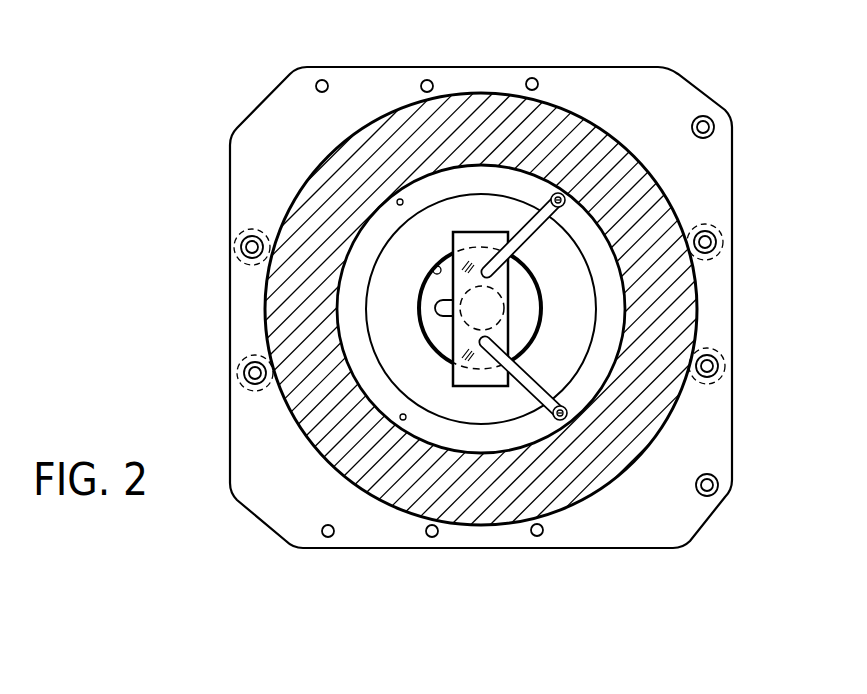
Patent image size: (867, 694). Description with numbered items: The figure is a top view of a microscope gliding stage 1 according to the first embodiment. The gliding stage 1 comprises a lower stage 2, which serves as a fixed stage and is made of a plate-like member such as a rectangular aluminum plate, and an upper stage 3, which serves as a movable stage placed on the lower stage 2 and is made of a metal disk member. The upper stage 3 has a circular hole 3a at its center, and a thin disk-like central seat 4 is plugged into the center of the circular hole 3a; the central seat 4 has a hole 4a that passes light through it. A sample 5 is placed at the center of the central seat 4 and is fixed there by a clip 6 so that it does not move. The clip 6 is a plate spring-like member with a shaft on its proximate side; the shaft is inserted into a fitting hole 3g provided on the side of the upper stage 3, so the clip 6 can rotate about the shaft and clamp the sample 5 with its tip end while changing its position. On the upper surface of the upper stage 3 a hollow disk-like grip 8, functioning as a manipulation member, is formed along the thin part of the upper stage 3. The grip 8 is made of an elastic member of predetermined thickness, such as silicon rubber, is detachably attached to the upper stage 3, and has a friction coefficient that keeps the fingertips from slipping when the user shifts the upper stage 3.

The gliding stage 1 is at (503, 303).
The lower stage 2 is at (285, 103).
The upper stage 3 is at (603, 260).
The circular hole 3a is at (505, 305).
The fitting hole 3g is at (560, 194).
The central seat 4 is at (407, 252).
The hole 4a is at (437, 262).
The sample 5 is at (452, 230).
The clip 6 is at (545, 178).
The grip 8 is at (596, 152).